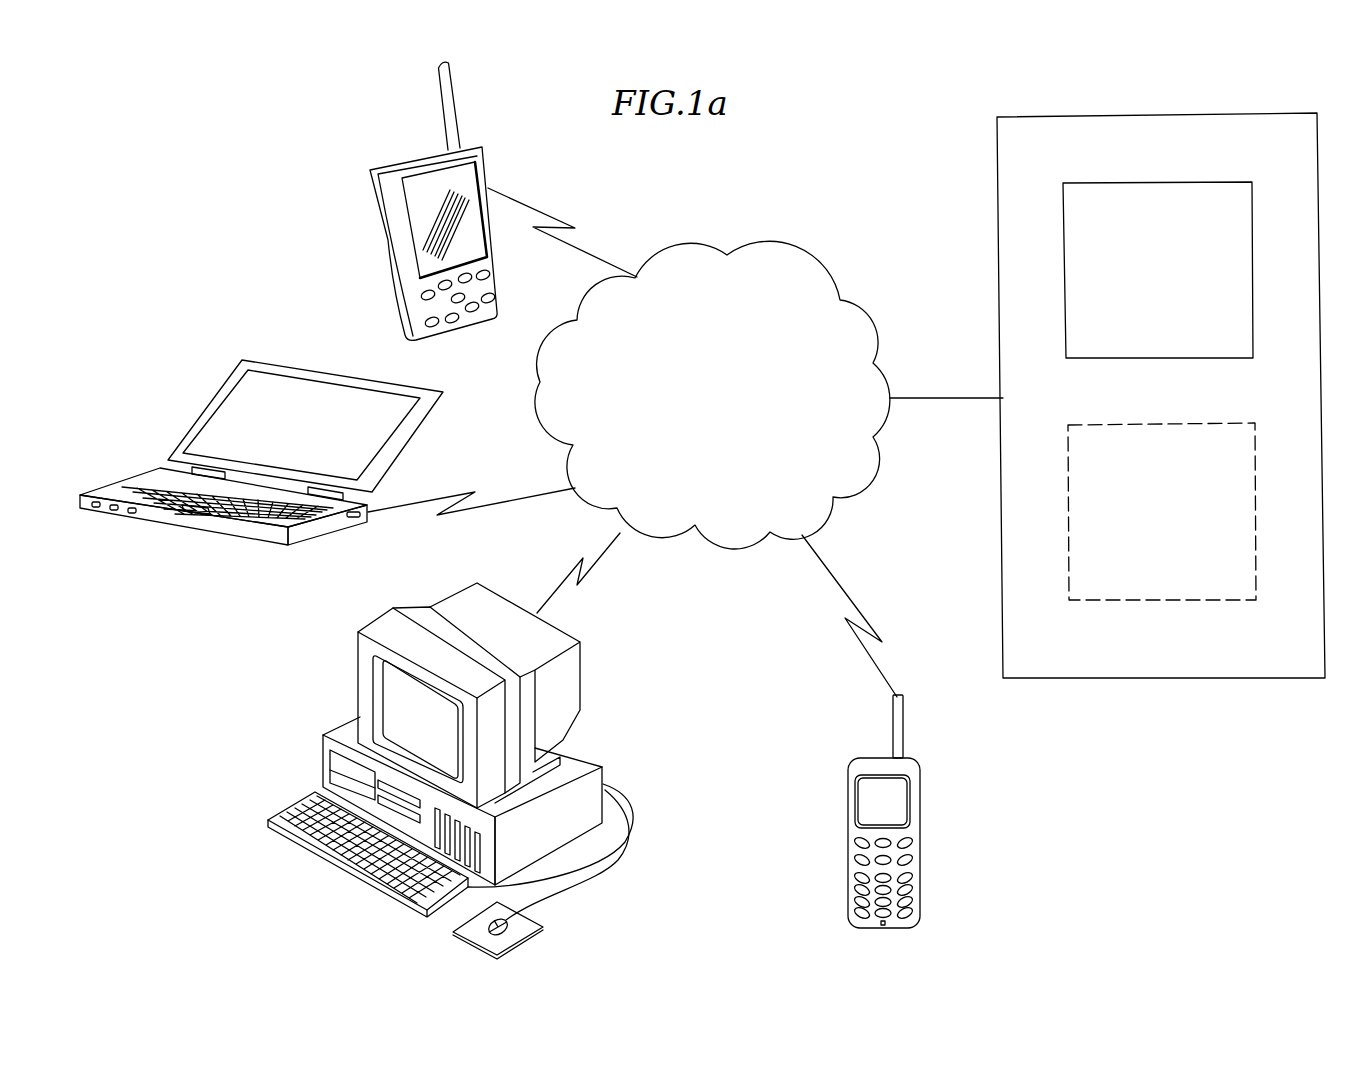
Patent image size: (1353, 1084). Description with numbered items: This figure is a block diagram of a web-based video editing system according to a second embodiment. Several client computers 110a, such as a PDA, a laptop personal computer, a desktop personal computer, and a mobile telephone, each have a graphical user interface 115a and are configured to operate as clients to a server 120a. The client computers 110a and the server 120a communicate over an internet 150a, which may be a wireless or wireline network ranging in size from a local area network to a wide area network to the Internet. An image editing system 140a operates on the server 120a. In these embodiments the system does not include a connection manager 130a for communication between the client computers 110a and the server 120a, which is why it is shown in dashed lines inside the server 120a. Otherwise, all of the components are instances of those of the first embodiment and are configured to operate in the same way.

The client computer 110a is at (579, 510).
The graphical user interface 115a is at (448, 187).
The internet 150a is at (767, 242).
The server 120a is at (1161, 372).
The image editing system 140a is at (1157, 182).
The connection manager 130a is at (1160, 423).